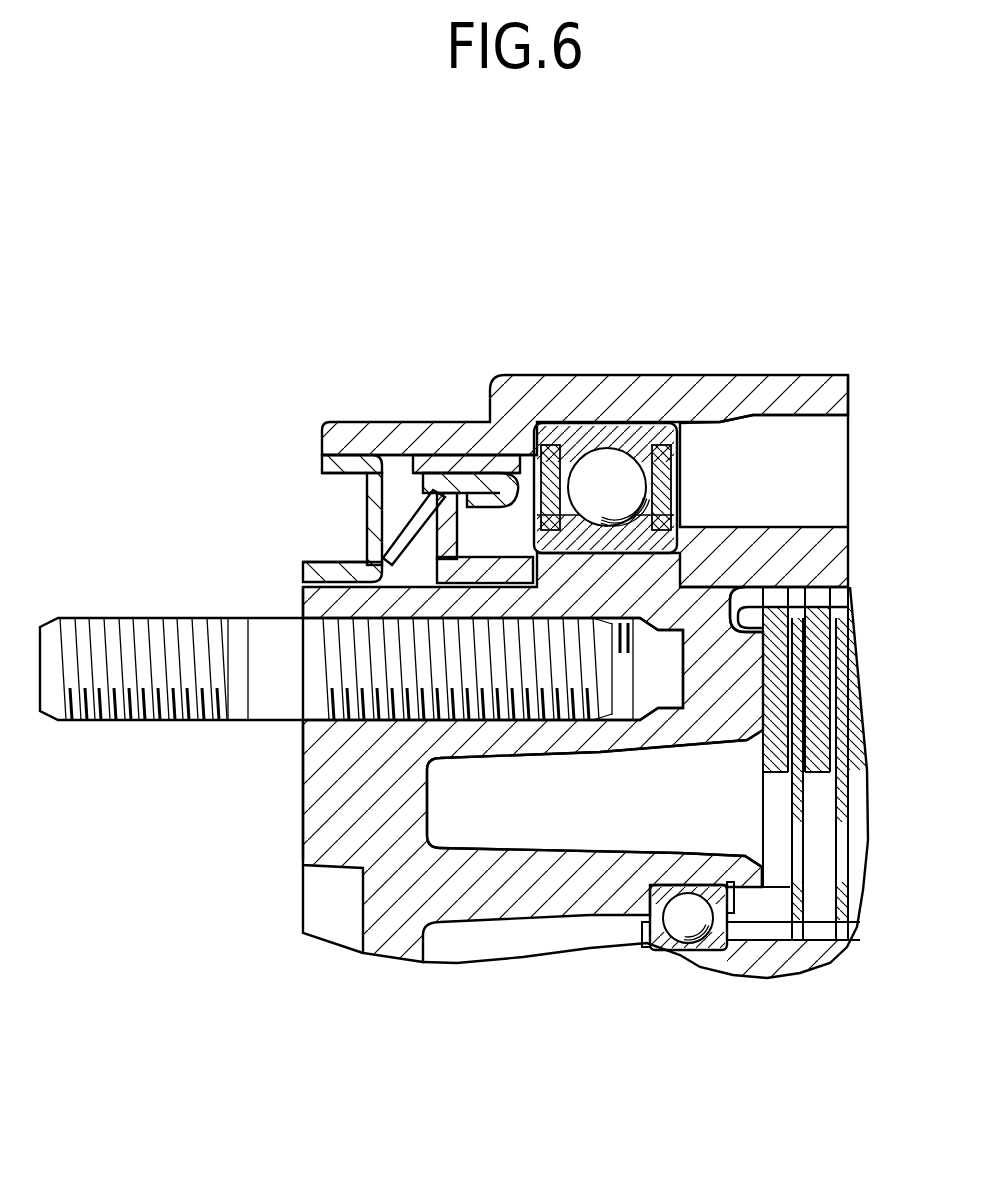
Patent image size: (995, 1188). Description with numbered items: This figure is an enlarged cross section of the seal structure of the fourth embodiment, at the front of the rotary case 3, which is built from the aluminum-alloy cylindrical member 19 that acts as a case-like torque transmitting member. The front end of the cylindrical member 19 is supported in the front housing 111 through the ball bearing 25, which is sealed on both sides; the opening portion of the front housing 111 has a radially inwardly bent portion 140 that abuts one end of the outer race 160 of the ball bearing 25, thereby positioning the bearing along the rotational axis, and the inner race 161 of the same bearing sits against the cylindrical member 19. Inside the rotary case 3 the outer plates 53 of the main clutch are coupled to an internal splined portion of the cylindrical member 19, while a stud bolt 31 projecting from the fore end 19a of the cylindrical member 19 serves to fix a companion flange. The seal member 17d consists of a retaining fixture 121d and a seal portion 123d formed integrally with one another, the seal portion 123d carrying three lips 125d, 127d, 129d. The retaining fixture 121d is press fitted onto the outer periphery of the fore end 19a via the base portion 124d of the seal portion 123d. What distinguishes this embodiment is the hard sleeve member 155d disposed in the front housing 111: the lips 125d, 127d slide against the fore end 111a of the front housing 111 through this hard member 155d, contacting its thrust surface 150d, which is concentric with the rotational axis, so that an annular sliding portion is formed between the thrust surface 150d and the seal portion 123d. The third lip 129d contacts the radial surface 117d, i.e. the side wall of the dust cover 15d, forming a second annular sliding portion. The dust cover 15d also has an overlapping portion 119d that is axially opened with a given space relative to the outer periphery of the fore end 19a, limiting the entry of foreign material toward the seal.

The front housing 111 is at (790, 370).
The fore end of the front housing 111a is at (347, 420).
The rotary case 3 is at (772, 520).
The cylindrical member 19 is at (290, 805).
The fore end of the cylindrical member 19a is at (302, 753).
The lip 129d is at (302, 594).
The base portion 124d is at (495, 584).
The stud bolt 31 is at (93, 703).
The seal member 17d is at (288, 416).
The dust cover 15d is at (337, 489).
The radial surface 117d is at (366, 530).
The overlapping portion 119d is at (302, 580).
The hard sleeve member 155d is at (466, 468).
The bent portion 140 is at (470, 456).
The thrust surface 150d is at (440, 472).
The lip 125d is at (428, 472).
The lip 127d is at (508, 474).
The seal portion 123d is at (420, 541).
The retaining fixture 121d is at (534, 568).
The outer race 160 is at (603, 425).
The bearing inner race 161 is at (635, 542).
The ball bearing 25 is at (615, 465).
The outer plates 53 is at (724, 630).